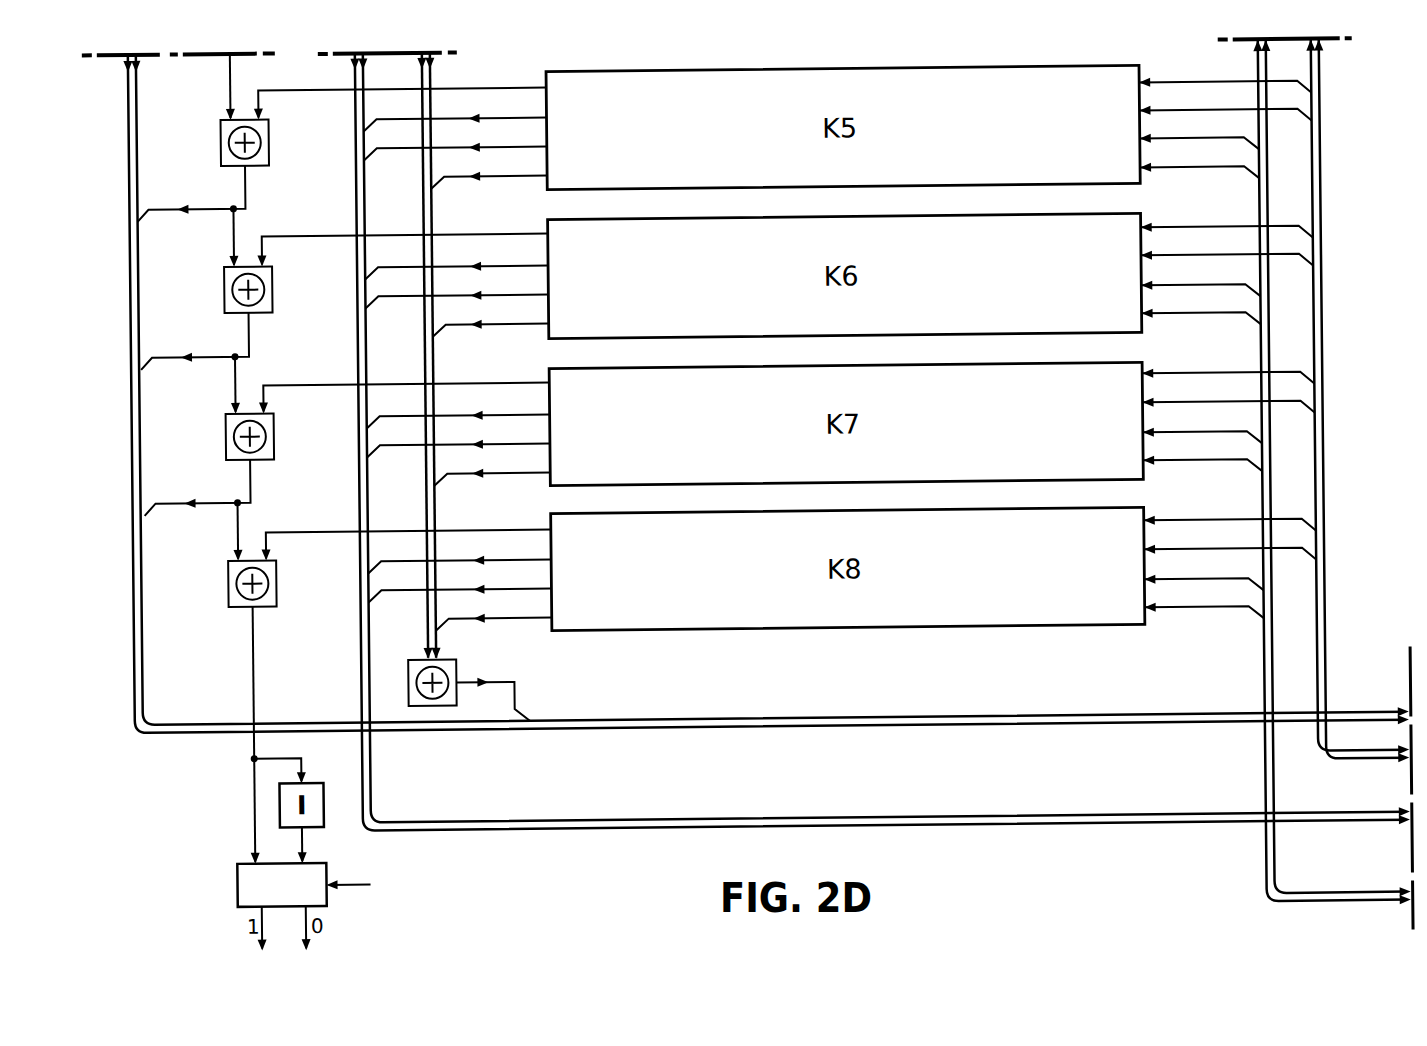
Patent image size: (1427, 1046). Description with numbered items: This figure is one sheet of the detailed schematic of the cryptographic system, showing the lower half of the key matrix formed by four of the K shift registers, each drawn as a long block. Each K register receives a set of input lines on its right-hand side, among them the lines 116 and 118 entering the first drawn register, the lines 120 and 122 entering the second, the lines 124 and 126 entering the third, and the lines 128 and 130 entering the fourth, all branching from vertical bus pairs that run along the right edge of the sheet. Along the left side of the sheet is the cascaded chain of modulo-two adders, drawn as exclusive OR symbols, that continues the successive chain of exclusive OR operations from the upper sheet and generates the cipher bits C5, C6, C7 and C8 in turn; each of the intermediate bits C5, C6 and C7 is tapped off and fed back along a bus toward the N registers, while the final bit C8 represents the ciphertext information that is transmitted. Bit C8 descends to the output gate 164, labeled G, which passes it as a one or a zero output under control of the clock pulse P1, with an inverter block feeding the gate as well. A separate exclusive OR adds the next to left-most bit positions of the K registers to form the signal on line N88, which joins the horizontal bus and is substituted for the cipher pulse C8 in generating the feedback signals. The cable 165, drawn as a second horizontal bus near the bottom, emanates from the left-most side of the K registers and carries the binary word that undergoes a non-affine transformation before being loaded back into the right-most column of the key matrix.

The input line to K5 116 is at (1184, 143).
The input line to K5 118 is at (1184, 172).
The input line to K6 120 is at (1184, 290).
The input line to K6 122 is at (1184, 318).
The input line to K7 124 is at (1184, 437).
The input line to K7 126 is at (1184, 465).
The input line to K8 128 is at (1184, 584).
The input line to K8 130 is at (1184, 612).
The gate G 164 is at (233, 880).
The cable 165 is at (956, 818).
The line N88 is at (515, 688).
The cipher bit C5 is at (212, 203).
The cipher bit C6 is at (212, 351).
The cipher bit C7 is at (213, 497).
The cipher bit C8 is at (251, 663).
The clock pulse P1 is at (363, 885).